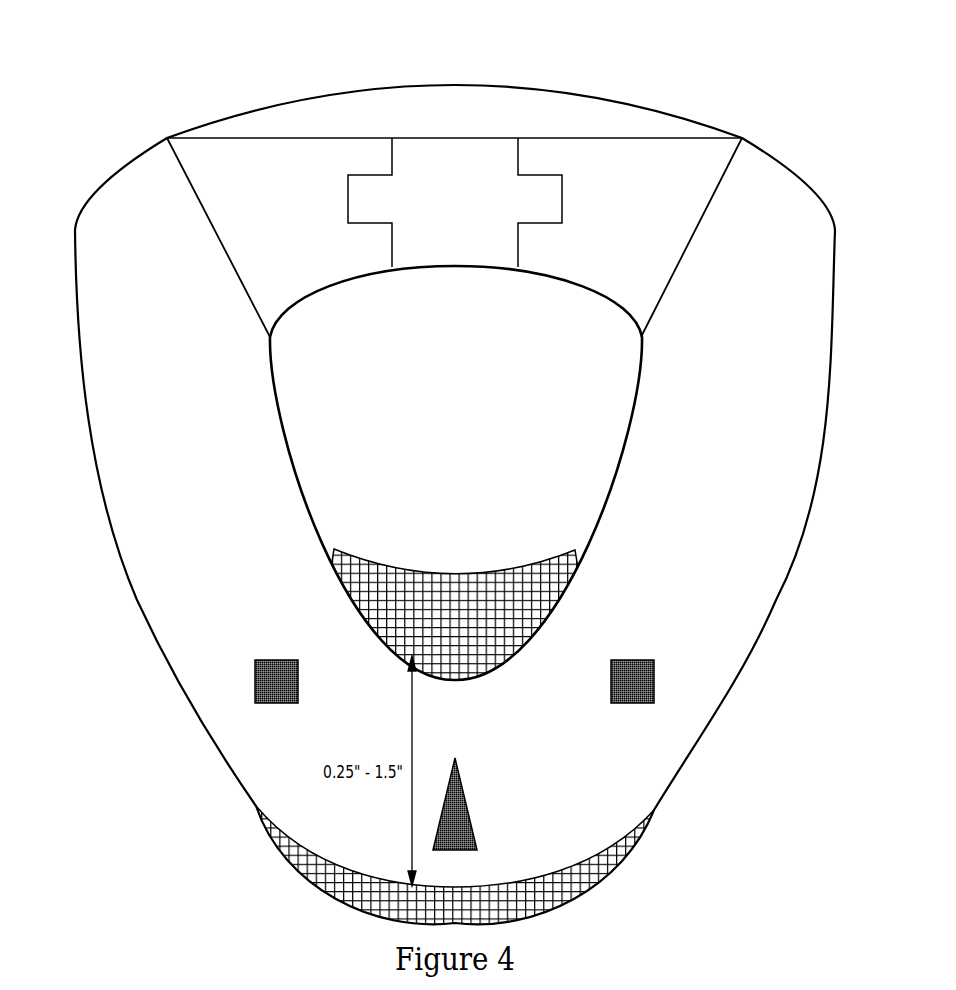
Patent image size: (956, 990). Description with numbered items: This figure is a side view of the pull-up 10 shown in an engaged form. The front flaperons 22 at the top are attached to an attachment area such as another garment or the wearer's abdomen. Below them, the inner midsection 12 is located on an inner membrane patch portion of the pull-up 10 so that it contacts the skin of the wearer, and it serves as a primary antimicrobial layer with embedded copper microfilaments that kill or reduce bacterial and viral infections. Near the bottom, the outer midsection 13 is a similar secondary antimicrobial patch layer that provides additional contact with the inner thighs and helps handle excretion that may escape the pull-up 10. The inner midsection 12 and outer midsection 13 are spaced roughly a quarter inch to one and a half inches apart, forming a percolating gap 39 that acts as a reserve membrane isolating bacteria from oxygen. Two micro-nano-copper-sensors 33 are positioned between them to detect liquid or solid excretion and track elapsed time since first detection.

The pull-up 10 is at (332, 66).
The front flaperons 22 is at (372, 160).
The inner midsection 12 is at (472, 566).
The micro-nano-copper-sensors 33 is at (278, 705).
The percolating gap 39 is at (467, 802).
The outer midsection 13 is at (583, 908).